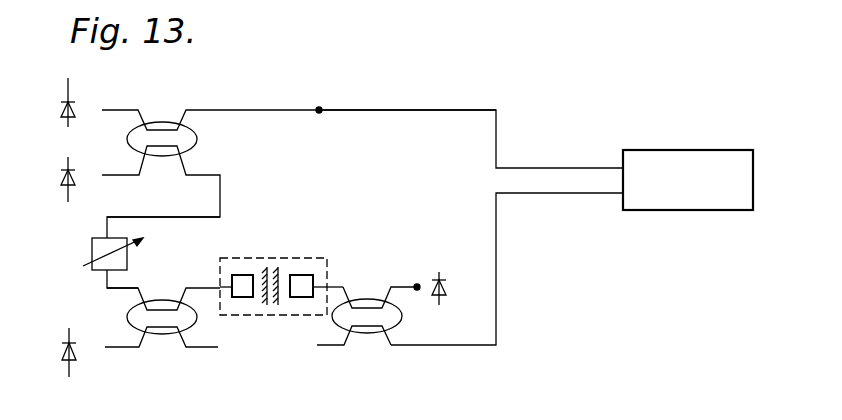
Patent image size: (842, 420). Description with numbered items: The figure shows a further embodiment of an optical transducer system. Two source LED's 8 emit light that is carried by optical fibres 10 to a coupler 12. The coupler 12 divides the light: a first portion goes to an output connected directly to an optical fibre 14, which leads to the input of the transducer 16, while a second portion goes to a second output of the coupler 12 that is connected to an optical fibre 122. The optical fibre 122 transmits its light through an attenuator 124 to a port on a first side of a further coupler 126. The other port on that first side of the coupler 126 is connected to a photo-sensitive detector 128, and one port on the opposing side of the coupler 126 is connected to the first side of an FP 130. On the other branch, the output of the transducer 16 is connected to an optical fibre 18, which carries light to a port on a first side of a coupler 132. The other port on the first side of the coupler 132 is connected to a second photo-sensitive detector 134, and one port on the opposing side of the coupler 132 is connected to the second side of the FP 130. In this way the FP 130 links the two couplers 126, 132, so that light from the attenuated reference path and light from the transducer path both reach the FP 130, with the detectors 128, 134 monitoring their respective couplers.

The source LED's 8 is at (62, 177).
The optical fibres 10 is at (133, 110).
The coupler 12 is at (158, 160).
The optical fibre 14 is at (368, 109).
The transducer 16 is at (662, 150).
The optical fibre 18 is at (497, 257).
The optical fibre 122 is at (138, 217).
The attenuator 124 is at (90, 250).
The further coupler 126 is at (160, 335).
The photo-sensitive detector 128 is at (62, 358).
The FP 130 is at (265, 316).
The coupler 132 is at (370, 335).
The second photo-sensitive detector 134 is at (438, 275).